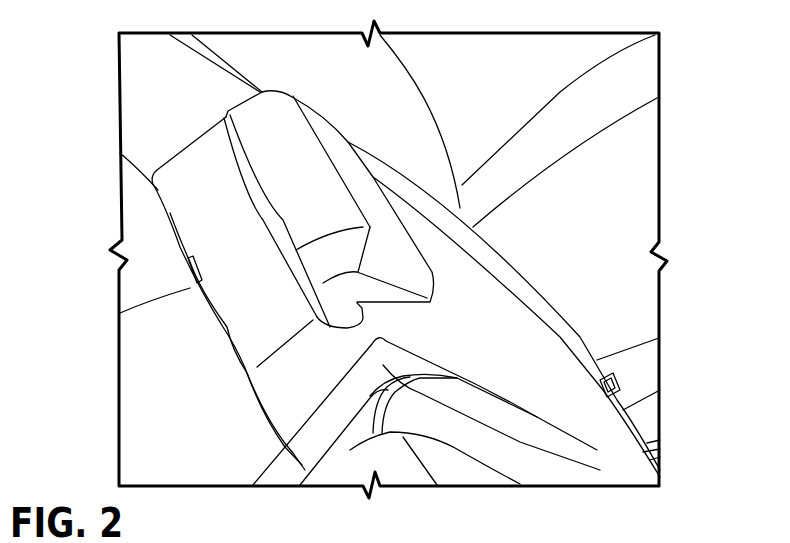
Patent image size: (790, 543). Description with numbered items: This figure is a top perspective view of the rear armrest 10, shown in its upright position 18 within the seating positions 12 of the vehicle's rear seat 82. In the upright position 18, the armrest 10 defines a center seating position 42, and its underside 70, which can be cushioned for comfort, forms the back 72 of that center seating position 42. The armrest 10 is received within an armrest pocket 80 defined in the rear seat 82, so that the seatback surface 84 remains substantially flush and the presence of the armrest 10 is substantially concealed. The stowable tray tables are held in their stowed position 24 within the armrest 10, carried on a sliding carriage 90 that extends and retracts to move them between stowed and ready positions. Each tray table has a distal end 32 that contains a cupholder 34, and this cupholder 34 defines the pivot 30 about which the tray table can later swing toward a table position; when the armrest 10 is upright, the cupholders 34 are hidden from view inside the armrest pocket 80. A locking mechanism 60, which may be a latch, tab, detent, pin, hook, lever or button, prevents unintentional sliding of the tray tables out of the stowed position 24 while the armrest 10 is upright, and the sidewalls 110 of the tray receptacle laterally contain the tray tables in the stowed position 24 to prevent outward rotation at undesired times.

The armrest 10 is at (594, 331).
The seating position 12 is at (502, 81).
The upright position 18 is at (213, 105).
The stowed position 24 is at (148, 151).
The pivot 30 is at (205, 295).
The distal end 32 is at (207, 222).
The cupholder 34 is at (325, 416).
The center seating position 42 is at (616, 210).
The locking mechanism 60 is at (190, 262).
The underside 70 is at (526, 347).
The back 72 is at (590, 425).
The armrest pocket 80 is at (300, 400).
The rear seat 82 is at (672, 143).
The seatback surface 84 is at (288, 75).
The sliding carriage 90 is at (255, 335).
The sidewalls 110 is at (597, 450).